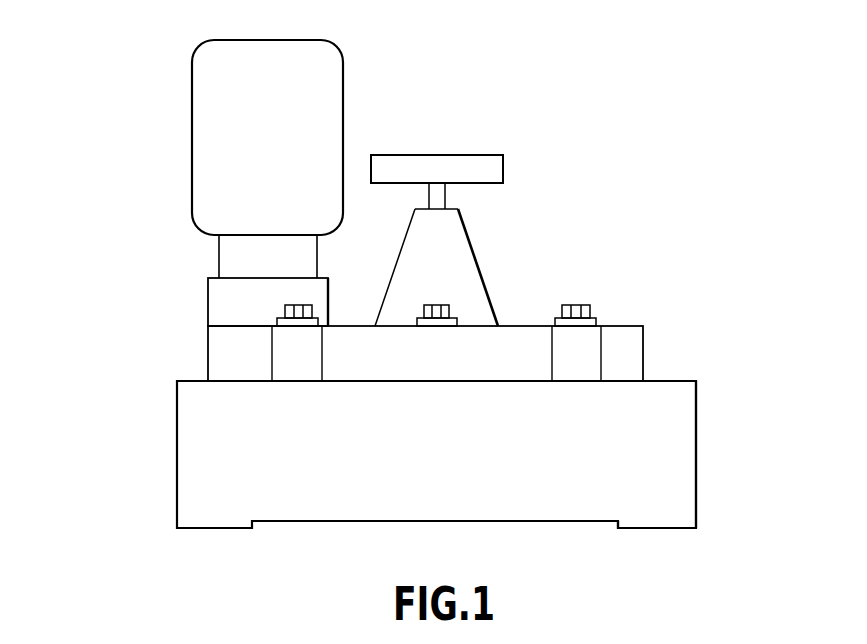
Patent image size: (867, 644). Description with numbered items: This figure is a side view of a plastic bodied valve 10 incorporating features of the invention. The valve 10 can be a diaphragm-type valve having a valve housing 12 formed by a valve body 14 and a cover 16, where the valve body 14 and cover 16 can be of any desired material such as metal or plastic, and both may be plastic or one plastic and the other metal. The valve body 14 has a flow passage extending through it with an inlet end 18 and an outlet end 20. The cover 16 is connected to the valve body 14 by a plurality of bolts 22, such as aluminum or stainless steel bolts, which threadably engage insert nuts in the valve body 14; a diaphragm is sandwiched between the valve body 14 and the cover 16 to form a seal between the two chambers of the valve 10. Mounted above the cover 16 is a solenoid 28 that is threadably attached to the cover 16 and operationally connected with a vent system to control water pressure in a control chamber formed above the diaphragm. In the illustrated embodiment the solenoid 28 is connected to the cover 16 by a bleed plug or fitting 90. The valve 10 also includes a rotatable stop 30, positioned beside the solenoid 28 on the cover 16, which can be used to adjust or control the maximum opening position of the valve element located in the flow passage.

The valve 10 is at (125, 138).
The valve housing 12 is at (125, 367).
The valve body 14 is at (680, 513).
The cover 16 is at (637, 333).
The inlet end 18 is at (715, 457).
The outlet end 20 is at (165, 462).
The bolts 22 is at (290, 313).
The solenoid 28 is at (253, 42).
The rotatable stop 30 is at (447, 155).
The bleed plug or fitting 90 is at (224, 262).